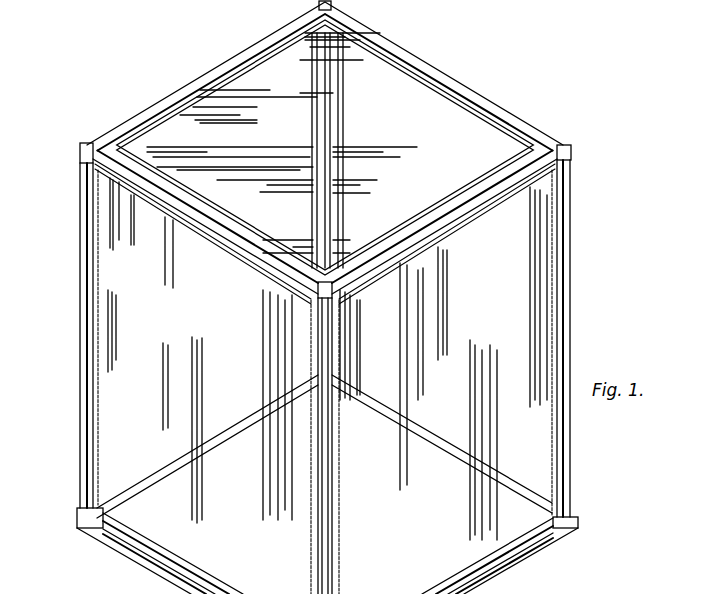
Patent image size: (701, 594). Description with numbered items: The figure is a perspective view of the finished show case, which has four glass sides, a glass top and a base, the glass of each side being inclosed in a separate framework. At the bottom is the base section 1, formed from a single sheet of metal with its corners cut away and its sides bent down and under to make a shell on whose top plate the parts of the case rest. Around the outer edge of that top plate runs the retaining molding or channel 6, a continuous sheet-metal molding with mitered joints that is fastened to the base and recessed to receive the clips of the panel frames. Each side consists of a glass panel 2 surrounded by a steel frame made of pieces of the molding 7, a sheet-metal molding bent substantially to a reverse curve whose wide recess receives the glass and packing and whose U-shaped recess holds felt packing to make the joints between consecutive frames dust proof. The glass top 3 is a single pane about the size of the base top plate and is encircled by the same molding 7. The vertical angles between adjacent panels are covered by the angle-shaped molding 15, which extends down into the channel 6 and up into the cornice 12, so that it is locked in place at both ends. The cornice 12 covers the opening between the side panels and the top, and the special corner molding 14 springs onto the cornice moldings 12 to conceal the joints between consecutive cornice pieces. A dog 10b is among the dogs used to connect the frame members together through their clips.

The base section 1 is at (80, 520).
The glass panel 2 is at (100, 360).
The glass top 3 is at (143, 140).
The retaining molding 6 is at (80, 510).
The steel molding 7 is at (193, 97).
The cornice 12 is at (167, 98).
The corner molding 14 is at (338, 6).
The molding 15 is at (82, 250).
The dog 10b is at (563, 589).